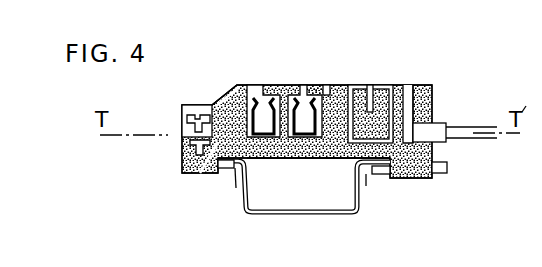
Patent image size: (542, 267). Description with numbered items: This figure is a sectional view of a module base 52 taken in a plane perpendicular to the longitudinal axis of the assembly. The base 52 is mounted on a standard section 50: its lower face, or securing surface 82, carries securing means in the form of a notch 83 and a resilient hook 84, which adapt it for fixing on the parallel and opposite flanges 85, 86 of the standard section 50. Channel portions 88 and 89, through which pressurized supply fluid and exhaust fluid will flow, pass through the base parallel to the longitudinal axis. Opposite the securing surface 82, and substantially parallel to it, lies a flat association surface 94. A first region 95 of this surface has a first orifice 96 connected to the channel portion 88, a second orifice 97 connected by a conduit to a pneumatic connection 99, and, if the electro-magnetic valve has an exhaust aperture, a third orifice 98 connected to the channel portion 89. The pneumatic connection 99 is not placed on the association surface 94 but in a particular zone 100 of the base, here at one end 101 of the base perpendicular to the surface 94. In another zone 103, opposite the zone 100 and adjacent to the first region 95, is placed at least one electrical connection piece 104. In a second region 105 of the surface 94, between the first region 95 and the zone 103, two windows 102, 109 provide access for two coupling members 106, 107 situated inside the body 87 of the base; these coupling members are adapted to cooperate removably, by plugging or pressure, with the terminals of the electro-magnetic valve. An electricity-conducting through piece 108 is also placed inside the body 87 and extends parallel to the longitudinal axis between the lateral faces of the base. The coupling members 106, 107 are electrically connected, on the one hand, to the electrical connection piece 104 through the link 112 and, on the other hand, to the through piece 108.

The standard section 50 is at (352, 214).
The module base 52 is at (88, 186).
The securing surface 82 is at (318, 170).
The notch 83 is at (220, 170).
The resilient hook 84 is at (368, 180).
The flange 85 is at (236, 190).
The flange 86 is at (374, 176).
The body of the base 87 is at (307, 158).
The channel portion 88 is at (341, 144).
The channel portion 89 is at (369, 122).
The association surface 94 is at (309, 82).
The first region 95 is at (428, 38).
The first orifice 96 is at (403, 86).
The second orifice 97 is at (411, 86).
The third orifice 98 is at (368, 85).
The pneumatic connection 99 is at (436, 131).
The particular zone 100 is at (457, 199).
The end of the base 101 is at (440, 156).
The window 102 is at (266, 86).
The zone 103 is at (182, 156).
The electrical connection piece 104 is at (182, 123).
The second region 105 is at (290, 38).
The coupling member 106 is at (238, 86).
The coupling member 107 is at (318, 86).
The electricity-conducting through piece 108 is at (290, 160).
The window 109 is at (300, 86).
The connection 112 is at (203, 175).